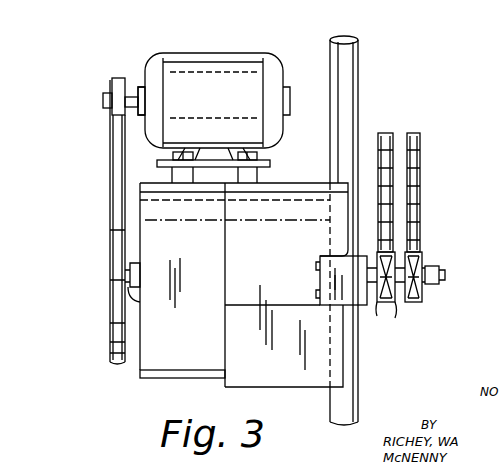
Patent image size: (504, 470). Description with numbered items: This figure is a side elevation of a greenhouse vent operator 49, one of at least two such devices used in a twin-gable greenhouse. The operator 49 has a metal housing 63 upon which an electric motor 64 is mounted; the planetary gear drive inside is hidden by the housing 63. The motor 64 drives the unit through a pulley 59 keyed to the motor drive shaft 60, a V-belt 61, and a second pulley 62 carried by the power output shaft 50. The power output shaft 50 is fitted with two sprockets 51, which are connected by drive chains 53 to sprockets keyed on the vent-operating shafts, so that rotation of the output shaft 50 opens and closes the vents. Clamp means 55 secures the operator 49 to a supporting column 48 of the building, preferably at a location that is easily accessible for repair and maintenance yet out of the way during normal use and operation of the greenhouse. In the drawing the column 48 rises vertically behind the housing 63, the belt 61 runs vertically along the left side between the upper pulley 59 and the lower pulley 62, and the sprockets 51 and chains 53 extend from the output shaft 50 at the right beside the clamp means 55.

The supporting column 48 is at (358, 62).
The operator 49 is at (140, 372).
The power output shaft 50 is at (130, 290).
The sprockets 51 is at (422, 262).
The drive chains 53 is at (392, 135).
The clamp means 55 is at (316, 282).
The pulley 59 is at (110, 84).
The motor drive shaft 60 is at (131, 97).
The V-belt 61 is at (112, 158).
The pulley 62 is at (112, 285).
The metal housing 63 is at (299, 186).
The electric motor 64 is at (200, 58).